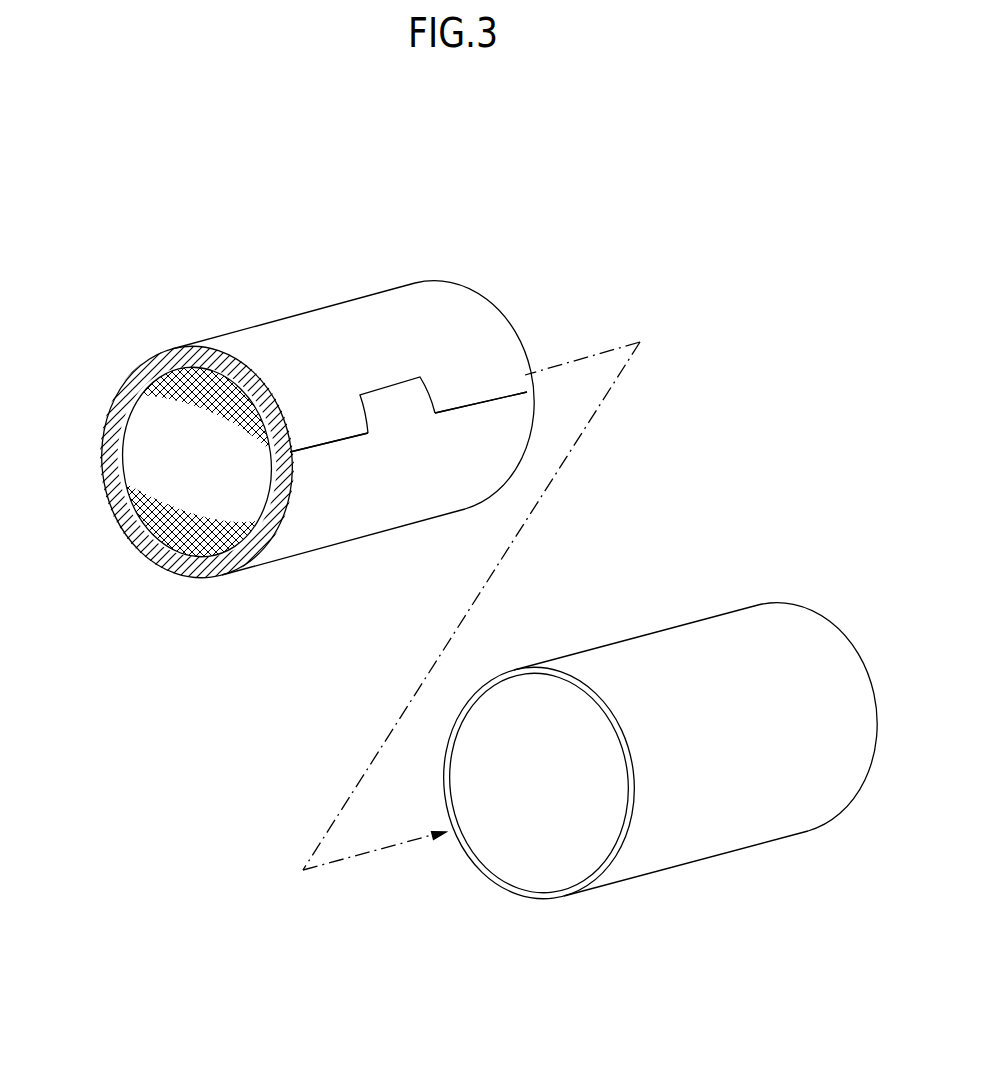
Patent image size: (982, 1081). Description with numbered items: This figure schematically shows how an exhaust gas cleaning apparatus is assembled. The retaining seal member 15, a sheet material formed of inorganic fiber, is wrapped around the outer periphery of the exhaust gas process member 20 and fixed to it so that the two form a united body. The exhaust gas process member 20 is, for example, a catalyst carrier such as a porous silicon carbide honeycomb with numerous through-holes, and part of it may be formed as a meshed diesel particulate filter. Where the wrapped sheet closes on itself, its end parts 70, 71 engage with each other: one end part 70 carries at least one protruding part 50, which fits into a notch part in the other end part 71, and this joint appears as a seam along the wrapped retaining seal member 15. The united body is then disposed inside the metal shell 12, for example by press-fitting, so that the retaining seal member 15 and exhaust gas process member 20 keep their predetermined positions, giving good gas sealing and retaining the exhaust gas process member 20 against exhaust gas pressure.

The metal shell 12 is at (725, 840).
The retaining seal member 15 is at (213, 352).
The exhaust gas process member 20 is at (135, 452).
The protruding part 50 is at (400, 405).
The end part 70 is at (477, 398).
The end part 71 is at (477, 398).